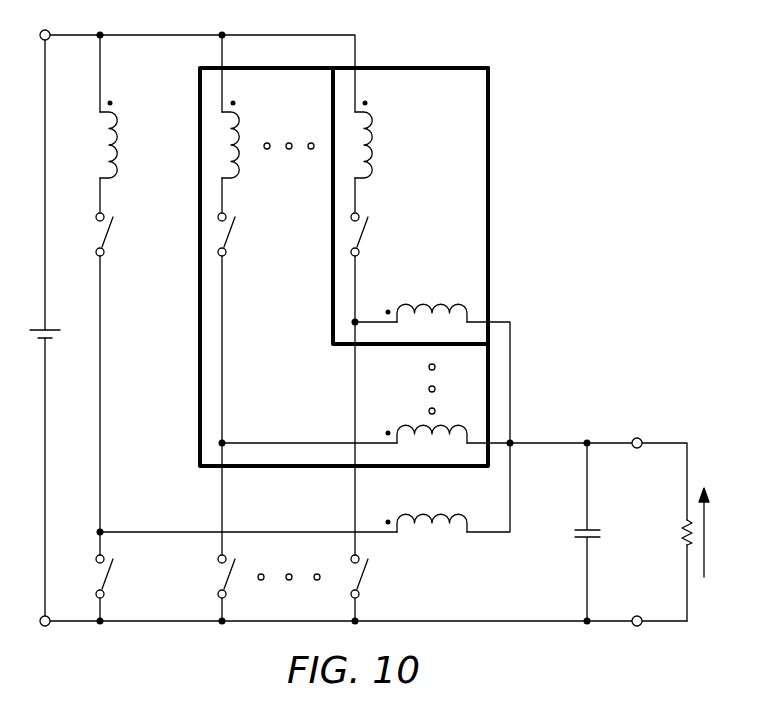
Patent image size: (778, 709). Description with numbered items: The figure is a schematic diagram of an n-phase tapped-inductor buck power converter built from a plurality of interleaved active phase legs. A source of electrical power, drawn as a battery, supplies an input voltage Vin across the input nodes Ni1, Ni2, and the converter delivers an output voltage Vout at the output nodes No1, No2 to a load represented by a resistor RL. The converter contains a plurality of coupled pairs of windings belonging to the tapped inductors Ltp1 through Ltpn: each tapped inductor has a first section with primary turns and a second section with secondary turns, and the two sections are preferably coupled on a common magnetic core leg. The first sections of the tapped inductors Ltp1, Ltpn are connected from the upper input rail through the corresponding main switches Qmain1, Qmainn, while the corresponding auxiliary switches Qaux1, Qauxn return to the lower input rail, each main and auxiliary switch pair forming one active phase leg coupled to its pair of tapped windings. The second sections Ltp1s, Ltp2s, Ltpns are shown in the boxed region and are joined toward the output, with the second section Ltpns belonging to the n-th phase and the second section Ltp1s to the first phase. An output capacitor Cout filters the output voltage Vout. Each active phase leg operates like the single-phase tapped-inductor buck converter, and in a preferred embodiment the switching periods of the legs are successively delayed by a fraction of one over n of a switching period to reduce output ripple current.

The input node Ni1 is at (46, 20).
The input node Ni2 is at (44, 637).
The input voltage Vin is at (30, 330).
The tapped inductor Ltp1 is at (130, 140).
The tapped inductor Ltpn is at (384, 140).
The main switch Qmain1 is at (135, 234).
The main switch Qmainn is at (389, 234).
The second section of tapped winding Ltpns is at (427, 297).
The second section of tapped winding Ltp1s is at (427, 506).
The second section of tapped winding Ltp2s is at (427, 434).
The auxiliary switch Qaux1 is at (131, 576).
The auxiliary switch Qauxn is at (385, 576).
The output node No1 is at (636, 429).
The output node No2 is at (636, 605).
The output capacitor Cout is at (564, 532).
The resistor RL is at (671, 529).
The output voltage Vout is at (722, 532).